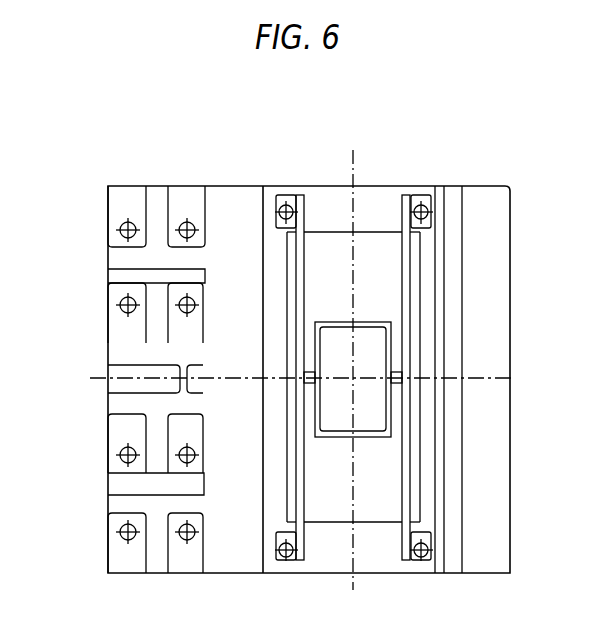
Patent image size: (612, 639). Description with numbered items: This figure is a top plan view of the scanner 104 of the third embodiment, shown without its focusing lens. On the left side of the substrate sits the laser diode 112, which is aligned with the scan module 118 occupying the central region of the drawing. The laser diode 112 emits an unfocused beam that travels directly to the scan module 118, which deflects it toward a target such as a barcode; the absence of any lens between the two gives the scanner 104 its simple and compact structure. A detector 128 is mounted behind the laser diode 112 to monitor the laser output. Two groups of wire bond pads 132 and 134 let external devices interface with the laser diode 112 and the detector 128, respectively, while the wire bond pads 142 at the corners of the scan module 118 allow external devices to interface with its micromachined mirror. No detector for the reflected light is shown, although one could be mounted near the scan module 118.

The scanner 104 is at (202, 148).
The laser diode 112 is at (190, 368).
The scan module 118 is at (327, 321).
The detector 128 is at (282, 388).
The wire bond pads 132 is at (168, 295).
The wire bond pads 134 is at (170, 416).
The wire bond pads 142 is at (297, 194).